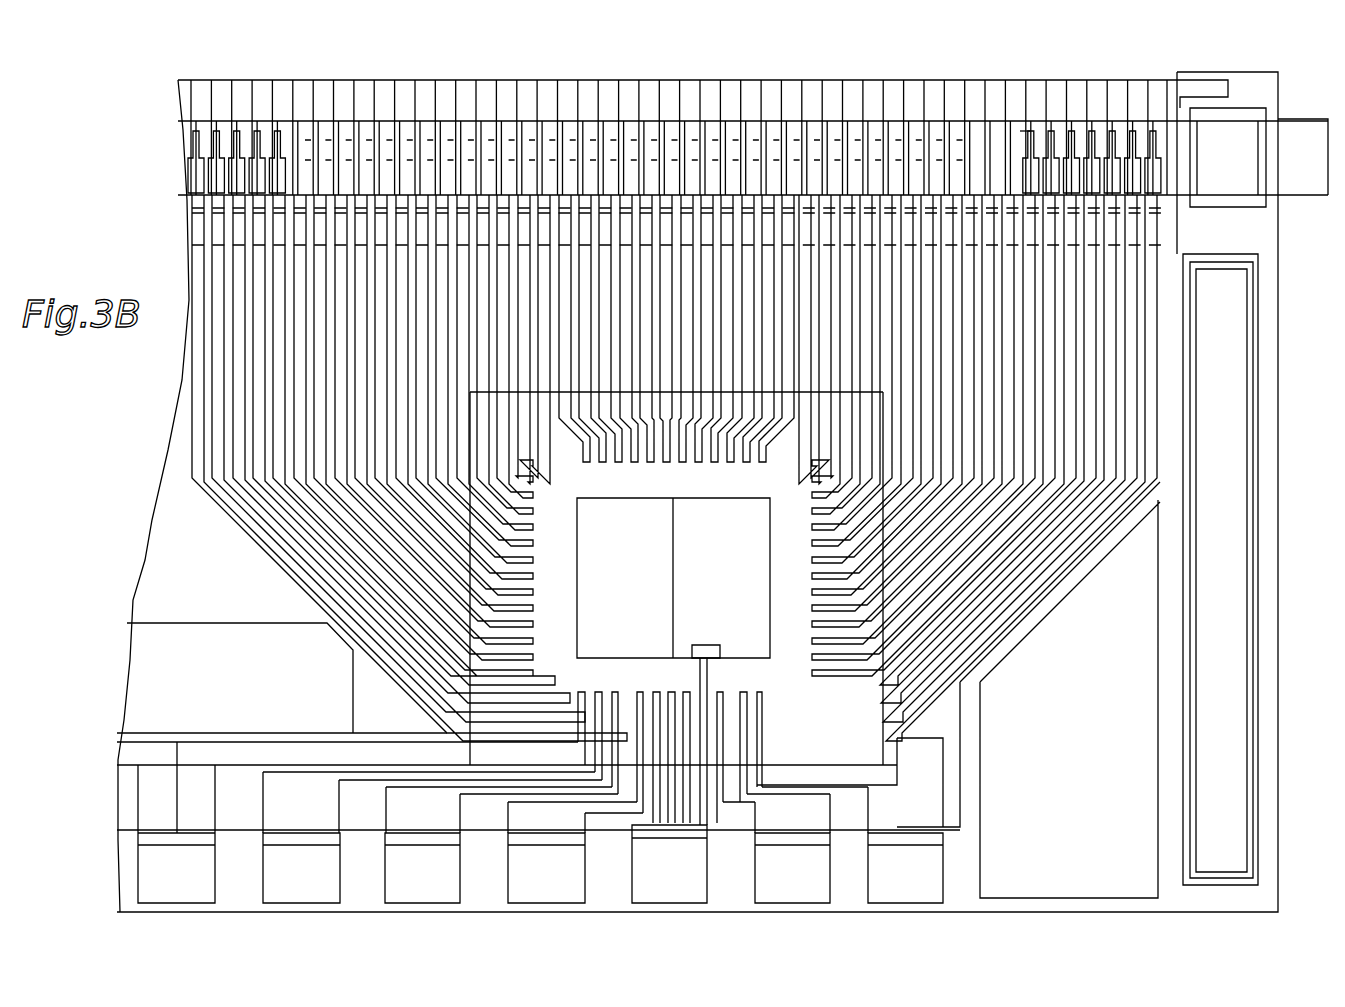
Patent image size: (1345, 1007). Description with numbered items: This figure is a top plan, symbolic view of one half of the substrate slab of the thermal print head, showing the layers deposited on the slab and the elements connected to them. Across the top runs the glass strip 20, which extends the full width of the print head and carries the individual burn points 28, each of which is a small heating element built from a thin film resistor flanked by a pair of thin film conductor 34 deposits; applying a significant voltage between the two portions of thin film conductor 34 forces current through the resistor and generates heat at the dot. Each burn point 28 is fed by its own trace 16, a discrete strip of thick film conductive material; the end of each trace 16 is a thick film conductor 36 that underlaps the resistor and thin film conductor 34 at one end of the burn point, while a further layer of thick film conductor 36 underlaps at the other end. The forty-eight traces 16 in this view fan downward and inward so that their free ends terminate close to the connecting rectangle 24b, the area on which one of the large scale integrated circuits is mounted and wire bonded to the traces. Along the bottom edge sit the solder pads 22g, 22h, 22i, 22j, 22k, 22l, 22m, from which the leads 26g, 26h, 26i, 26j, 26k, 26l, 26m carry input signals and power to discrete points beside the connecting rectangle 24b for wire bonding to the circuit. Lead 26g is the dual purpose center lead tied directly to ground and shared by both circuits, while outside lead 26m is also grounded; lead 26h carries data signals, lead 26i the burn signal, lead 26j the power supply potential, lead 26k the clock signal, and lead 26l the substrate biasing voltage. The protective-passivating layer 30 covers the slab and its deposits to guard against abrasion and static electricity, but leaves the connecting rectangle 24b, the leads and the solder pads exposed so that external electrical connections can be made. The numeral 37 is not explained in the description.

The trace 16 is at (330, 578).
The glass strip 20 is at (1315, 170).
The solder pad 22g is at (184, 884).
The solder pad 22h is at (316, 884).
The solder pad 22i is at (436, 884).
The solder pad 22j is at (560, 884).
The solder pad 22k is at (672, 884).
The solder pad 22l is at (802, 884).
The solder pad 22m is at (928, 884).
The connecting rectangle 24b is at (700, 490).
The lead 26g is at (580, 681).
The lead 26h is at (637, 690).
The lead 26i is at (640, 690).
The lead 26j is at (653, 690).
The lead 26k is at (707, 740).
The lead 26l is at (708, 645).
The lead 26m is at (748, 683).
The burn point 28 is at (277, 128).
The protective-passivating layer 30 is at (700, 306).
The thin film conductor 34 is at (1033, 163).
The thick film conductor 36 is at (1035, 140).
The tab connection 37 is at (1027, 140).